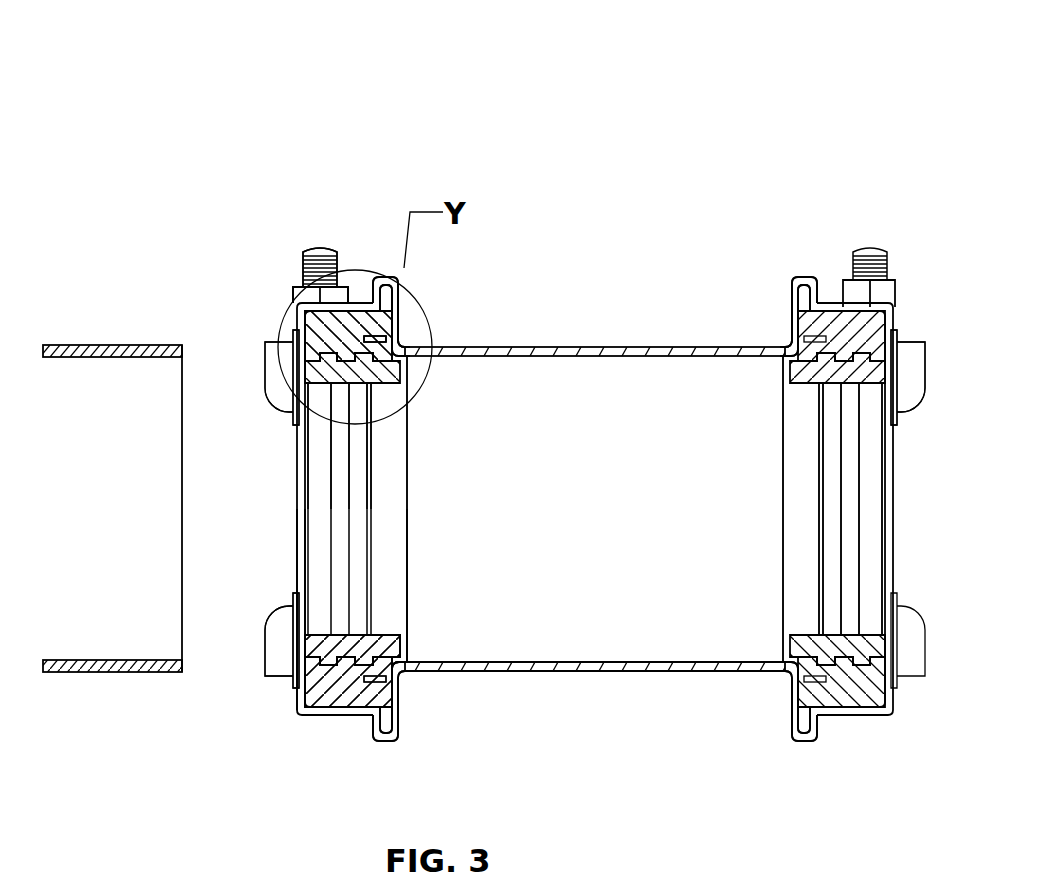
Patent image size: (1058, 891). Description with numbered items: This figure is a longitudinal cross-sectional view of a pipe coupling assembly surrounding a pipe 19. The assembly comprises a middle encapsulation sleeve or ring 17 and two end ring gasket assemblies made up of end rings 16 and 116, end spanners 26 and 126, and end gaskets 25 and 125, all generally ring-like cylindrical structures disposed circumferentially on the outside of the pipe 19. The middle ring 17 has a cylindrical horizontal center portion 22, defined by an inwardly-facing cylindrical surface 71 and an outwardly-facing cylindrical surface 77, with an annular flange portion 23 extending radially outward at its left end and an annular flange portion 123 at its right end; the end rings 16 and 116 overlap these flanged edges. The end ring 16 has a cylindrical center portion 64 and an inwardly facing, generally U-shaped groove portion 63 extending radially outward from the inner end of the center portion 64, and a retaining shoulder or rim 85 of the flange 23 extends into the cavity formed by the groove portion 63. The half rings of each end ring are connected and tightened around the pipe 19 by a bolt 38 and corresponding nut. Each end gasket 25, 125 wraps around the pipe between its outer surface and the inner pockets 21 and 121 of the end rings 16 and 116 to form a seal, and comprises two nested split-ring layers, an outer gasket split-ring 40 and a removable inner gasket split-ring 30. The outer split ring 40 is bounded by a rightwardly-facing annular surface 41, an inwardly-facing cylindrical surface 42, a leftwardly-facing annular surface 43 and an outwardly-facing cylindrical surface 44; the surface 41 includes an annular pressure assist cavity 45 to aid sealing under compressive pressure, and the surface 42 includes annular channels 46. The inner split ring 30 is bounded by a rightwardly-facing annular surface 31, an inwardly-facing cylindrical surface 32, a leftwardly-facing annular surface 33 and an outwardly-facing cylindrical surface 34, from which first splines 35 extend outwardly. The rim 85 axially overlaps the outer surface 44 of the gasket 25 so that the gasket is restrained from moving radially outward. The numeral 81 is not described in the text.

The pipe 19 is at (140, 325).
The end ring 16 is at (380, 217).
The middle encapsulation sleeve or ring 17 is at (593, 292).
The cylindrical horizontal center portion 22 is at (600, 352).
The groove portion 63 is at (387, 273).
The retaining shoulder or rim 85 is at (401, 300).
The cylindrical horizontal center portion 64 is at (356, 300).
The bolt 38 is at (300, 248).
The outer gasket split-ring 40 is at (291, 293).
The housing lip 81 is at (320, 310).
The annular channels 46 is at (323, 340).
The end spanner 26 is at (292, 377).
The end gasket 25 is at (305, 455).
The annular pressure assist cavity 45 is at (392, 338).
The annular flange portion 23 is at (404, 332).
The inner gasket split-ring 30 is at (413, 371).
The first splines 35 is at (336, 369).
The inwardly-facing horizontal cylindrical surface 32 is at (392, 636).
The inwardly-facing horizontal cylindrical surface 42 is at (366, 656).
The rightwardly-facing vertical annular surface 31 is at (406, 658).
The leftwardly-facing vertical annular surface 33 is at (297, 656).
The outwardly-facing horizontal cylindrical surface 34 is at (300, 682).
The leftwardly-facing vertical annular surface 43 is at (303, 695).
The outwardly-facing horizontal cylindrical surface 44 is at (348, 713).
The inner pocket 21 is at (396, 736).
The rightwardly-facing vertical annular surface 41 is at (401, 698).
The end ring 116 is at (802, 246).
The annular flange portion 123 is at (790, 333).
The end spanner 126 is at (894, 383).
The end gasket 125 is at (883, 497).
The inwardly-facing horizontal cylindrical surface 71 is at (622, 663).
The outwardly-facing horizontal cylindrical surface 77 is at (620, 673).
The inner pocket 121 is at (792, 728).